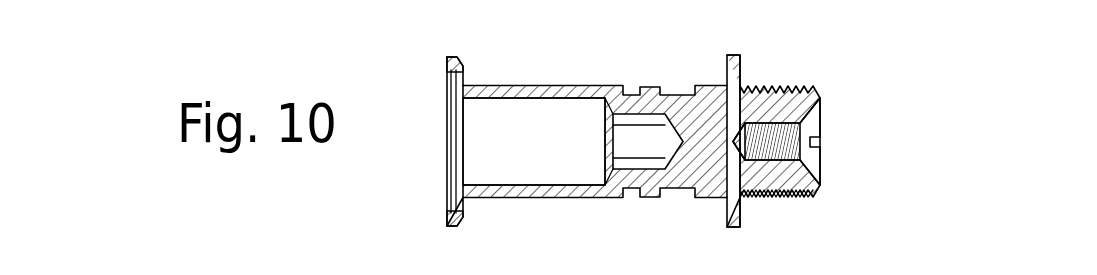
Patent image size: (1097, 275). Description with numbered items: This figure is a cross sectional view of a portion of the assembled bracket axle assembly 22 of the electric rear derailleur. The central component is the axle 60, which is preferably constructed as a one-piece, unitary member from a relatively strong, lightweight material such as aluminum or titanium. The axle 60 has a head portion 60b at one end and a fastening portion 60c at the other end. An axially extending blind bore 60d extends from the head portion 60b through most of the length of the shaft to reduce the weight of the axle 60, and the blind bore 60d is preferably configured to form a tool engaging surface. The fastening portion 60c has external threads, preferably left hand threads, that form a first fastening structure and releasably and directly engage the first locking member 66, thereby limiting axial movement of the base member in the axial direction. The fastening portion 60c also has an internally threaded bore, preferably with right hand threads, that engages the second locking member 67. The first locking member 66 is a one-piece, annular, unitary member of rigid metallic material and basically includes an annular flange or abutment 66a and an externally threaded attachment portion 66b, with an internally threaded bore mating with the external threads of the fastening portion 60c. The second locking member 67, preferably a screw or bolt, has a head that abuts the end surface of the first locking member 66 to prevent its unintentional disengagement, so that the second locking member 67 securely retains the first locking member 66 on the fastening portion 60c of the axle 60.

The bracket axle assembly 22 is at (634, 58).
The axle 60 is at (532, 82).
The head portion 60b is at (440, 65).
The fastening portion 60c is at (760, 88).
The blind bore 60d is at (498, 185).
The first locking member 66 is at (797, 80).
The annular flange or abutment 66a is at (727, 226).
The externally threaded attachment portion 66b is at (770, 198).
The second locking member 67 is at (834, 111).